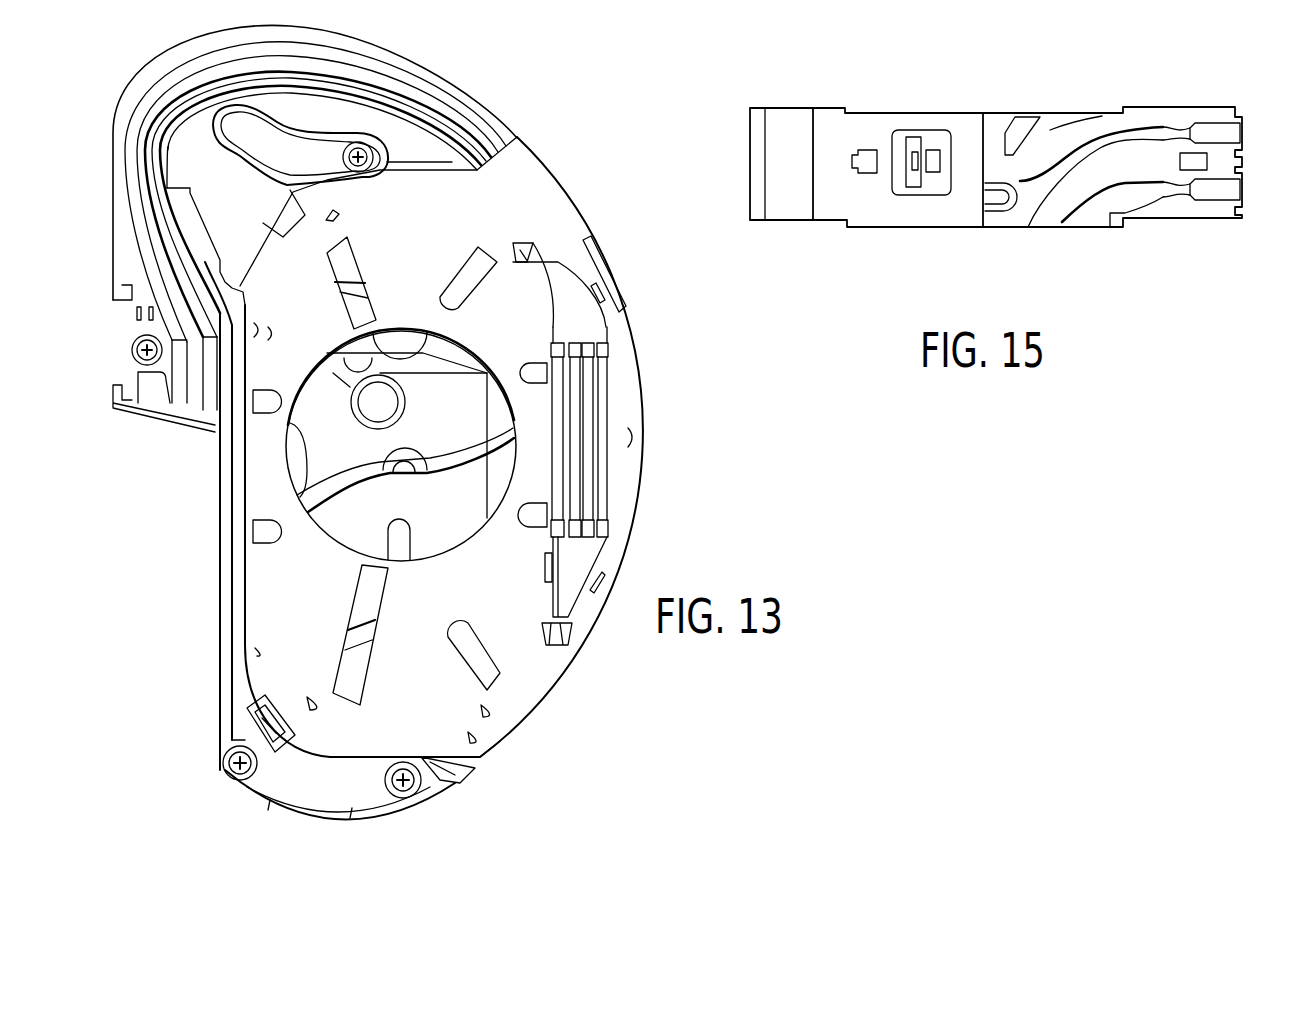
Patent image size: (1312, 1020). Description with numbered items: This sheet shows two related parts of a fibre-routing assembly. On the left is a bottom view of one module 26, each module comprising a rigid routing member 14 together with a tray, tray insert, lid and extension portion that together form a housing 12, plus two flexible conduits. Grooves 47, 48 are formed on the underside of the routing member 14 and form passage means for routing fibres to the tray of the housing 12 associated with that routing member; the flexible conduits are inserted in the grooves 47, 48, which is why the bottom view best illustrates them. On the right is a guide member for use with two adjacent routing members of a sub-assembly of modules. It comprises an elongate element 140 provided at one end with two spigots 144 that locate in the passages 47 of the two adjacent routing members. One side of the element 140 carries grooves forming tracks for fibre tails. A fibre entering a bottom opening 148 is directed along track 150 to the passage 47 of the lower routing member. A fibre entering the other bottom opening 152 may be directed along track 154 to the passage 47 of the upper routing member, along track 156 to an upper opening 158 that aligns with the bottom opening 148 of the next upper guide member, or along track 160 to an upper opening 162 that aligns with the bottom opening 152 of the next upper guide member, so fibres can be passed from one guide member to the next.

In FIG. 13, the housing 12 is at (542, 713).
In FIG. 13, the rigid routing member 14 is at (218, 607).
In FIG. 13, the module 26 is at (210, 748).
In FIG. 13, the groove 47 is at (205, 432).
In FIG. 13, the groove 48 is at (170, 420).
In FIG. 15, the elongate element 140 is at (775, 152).
In FIG. 15, the spigot 144 is at (1242, 130).
In FIG. 15, the bottom opening 148 is at (1087, 227).
In FIG. 15, the track 150 is at (1135, 197).
In FIG. 15, the bottom opening 152 is at (997, 227).
In FIG. 15, the track 154 is at (1060, 177).
In FIG. 15, the track 156 is at (1048, 130).
In FIG. 15, the upper opening 158 is at (1053, 112).
In FIG. 15, the track 160 is at (990, 137).
In FIG. 15, the upper opening 162 is at (993, 108).